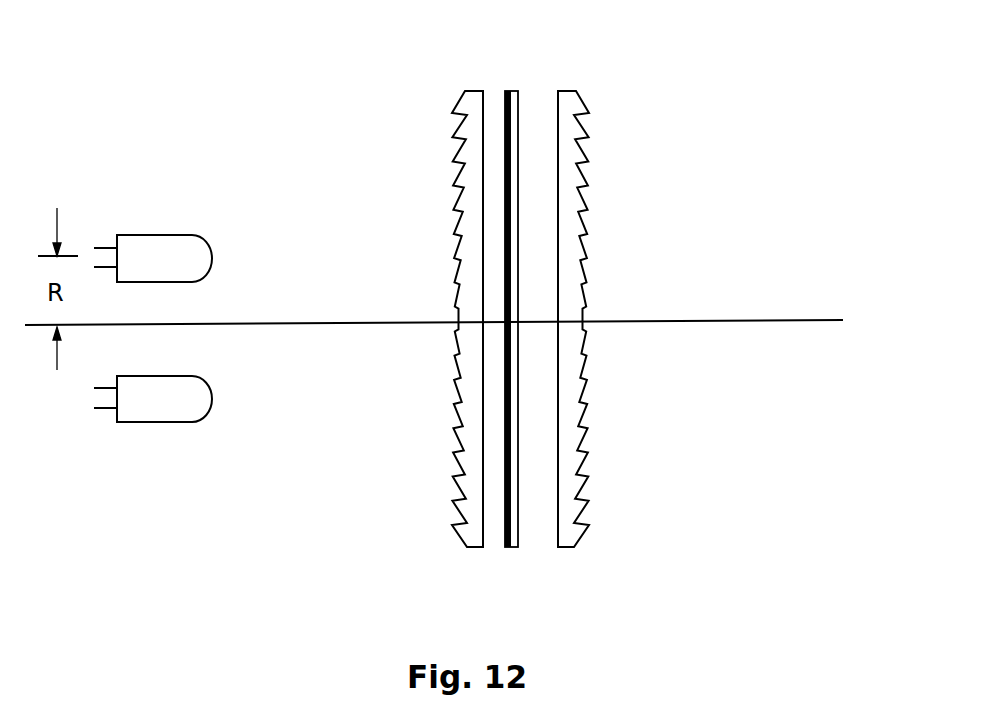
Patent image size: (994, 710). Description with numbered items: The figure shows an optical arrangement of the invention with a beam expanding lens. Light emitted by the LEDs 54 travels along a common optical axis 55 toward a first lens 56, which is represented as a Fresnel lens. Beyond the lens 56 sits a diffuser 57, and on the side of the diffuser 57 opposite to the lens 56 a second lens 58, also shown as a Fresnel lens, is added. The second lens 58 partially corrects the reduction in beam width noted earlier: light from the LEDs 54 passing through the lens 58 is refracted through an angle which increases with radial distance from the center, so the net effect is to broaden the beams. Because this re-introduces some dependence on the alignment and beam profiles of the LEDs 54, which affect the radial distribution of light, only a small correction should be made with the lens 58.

The LEDs 54 is at (160, 226).
The optical axis 55 is at (456, 321).
The lens 56 is at (475, 66).
The diffuser 57 is at (514, 65).
The second lens 58 is at (567, 66).